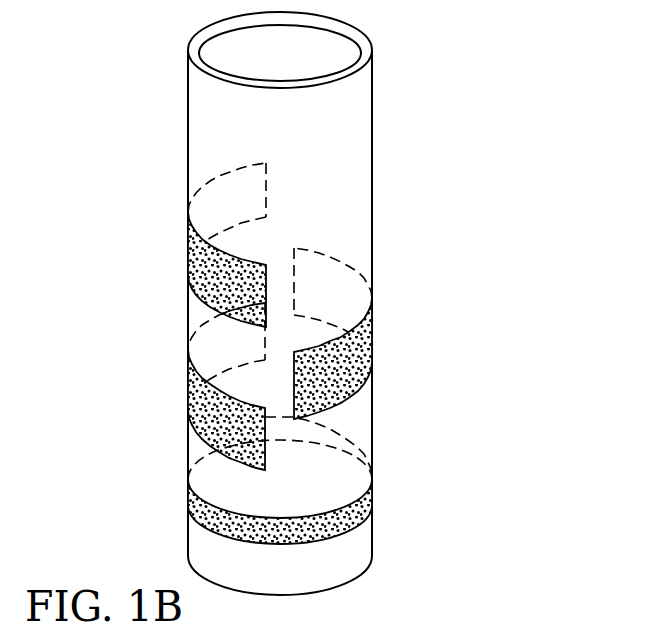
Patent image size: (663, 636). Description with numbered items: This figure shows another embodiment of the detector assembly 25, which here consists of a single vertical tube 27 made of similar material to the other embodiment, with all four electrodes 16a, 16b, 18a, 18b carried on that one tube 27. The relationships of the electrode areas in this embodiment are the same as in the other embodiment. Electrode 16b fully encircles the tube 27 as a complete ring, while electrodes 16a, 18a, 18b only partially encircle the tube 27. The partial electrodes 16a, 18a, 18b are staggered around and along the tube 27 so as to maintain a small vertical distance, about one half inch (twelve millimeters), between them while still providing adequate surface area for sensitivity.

The detector assembly 25 is at (442, 101).
The single vertical tube 27 is at (301, 37).
The electrode 16a is at (356, 361).
The electrode 16b is at (357, 505).
The electrode 18a is at (203, 267).
The electrode 18b is at (207, 404).